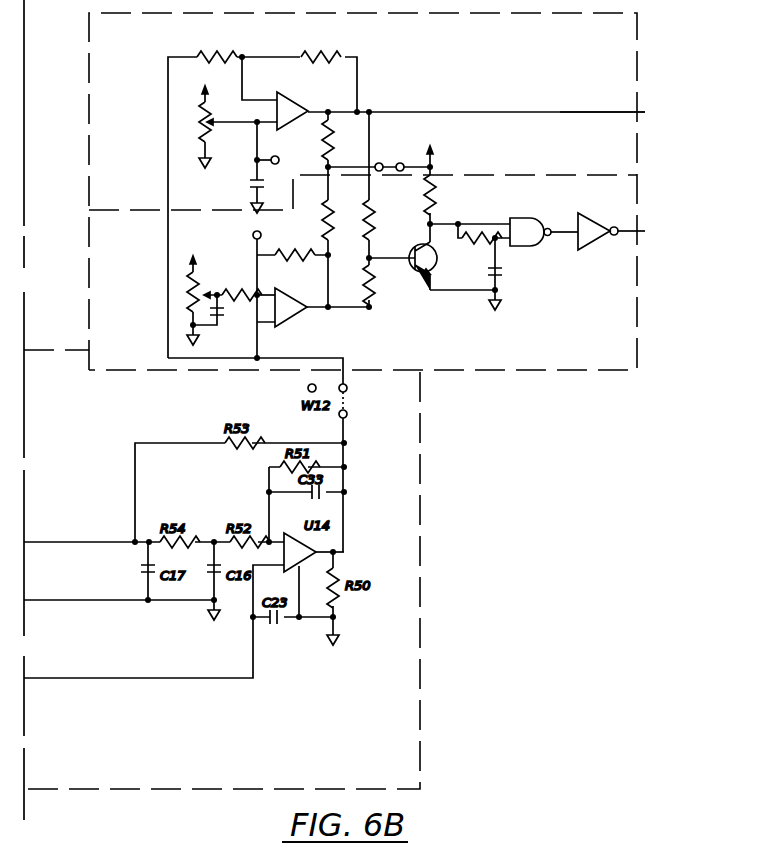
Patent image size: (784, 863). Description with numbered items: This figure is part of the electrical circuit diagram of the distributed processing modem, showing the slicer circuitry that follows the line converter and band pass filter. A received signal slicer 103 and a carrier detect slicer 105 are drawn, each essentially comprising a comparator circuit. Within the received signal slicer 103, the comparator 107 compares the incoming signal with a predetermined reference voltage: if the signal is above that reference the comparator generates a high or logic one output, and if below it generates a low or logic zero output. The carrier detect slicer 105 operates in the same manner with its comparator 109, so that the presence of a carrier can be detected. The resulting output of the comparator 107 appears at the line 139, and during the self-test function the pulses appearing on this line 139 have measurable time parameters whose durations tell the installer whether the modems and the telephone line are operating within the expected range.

The received signal slicer 103 is at (502, 54).
The carrier detect slicer 105 is at (590, 200).
The comparator 107 is at (283, 94).
The comparator 109 is at (291, 318).
The line 139 is at (610, 112).